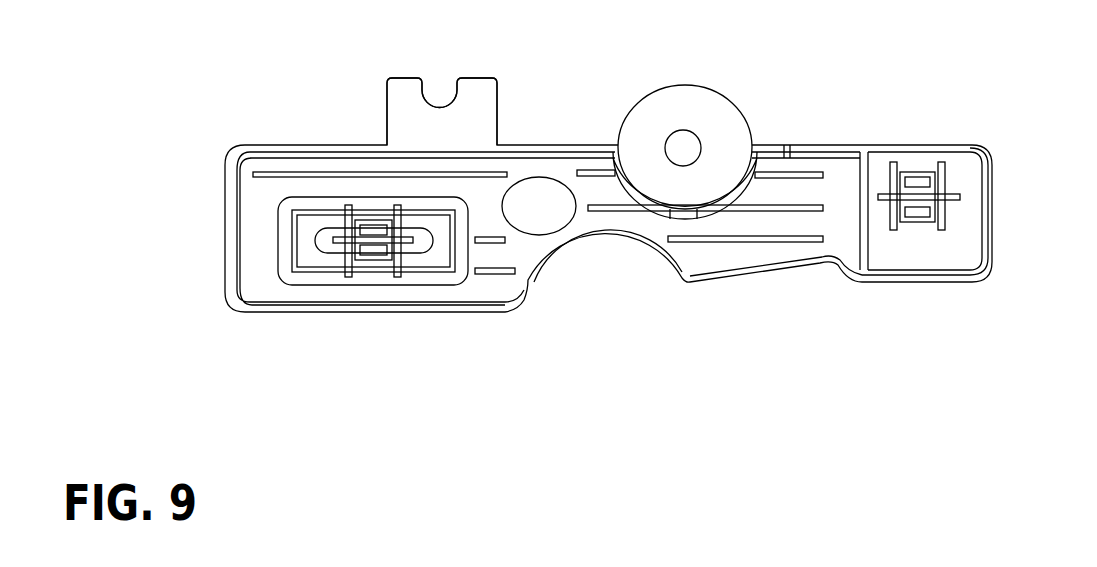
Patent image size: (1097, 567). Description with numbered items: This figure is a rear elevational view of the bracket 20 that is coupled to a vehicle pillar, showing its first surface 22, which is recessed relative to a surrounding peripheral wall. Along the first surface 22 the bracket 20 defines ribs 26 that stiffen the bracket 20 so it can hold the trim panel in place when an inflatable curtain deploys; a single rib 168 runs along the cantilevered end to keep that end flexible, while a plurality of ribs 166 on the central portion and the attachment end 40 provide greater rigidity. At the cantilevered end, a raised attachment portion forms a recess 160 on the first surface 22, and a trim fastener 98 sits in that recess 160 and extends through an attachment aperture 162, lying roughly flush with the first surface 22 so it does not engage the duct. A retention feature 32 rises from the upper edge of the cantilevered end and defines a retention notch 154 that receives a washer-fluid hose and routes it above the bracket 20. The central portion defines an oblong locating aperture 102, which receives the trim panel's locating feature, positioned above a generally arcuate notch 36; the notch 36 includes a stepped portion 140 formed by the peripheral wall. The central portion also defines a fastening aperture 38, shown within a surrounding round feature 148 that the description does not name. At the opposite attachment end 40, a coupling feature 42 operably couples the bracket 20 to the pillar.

The bracket 20 is at (172, 127).
The first surface 22 is at (253, 229).
The ribs 26 is at (590, 168).
The retention feature 32 is at (395, 92).
The notch 36 is at (568, 252).
The fastening apertures 38 is at (683, 147).
The attachment end 40 is at (993, 204).
The coupling feature 42 is at (950, 170).
The trim fastener 98 is at (373, 256).
The locating aperture 102 is at (535, 196).
The stepped portion 140 is at (680, 272).
The boss 148 is at (727, 90).
The retention notch 154 is at (447, 104).
The recess 160 is at (303, 256).
The attachment aperture 162 is at (325, 244).
The plurality of ribs 166 is at (795, 175).
The single rib 168 is at (300, 172).